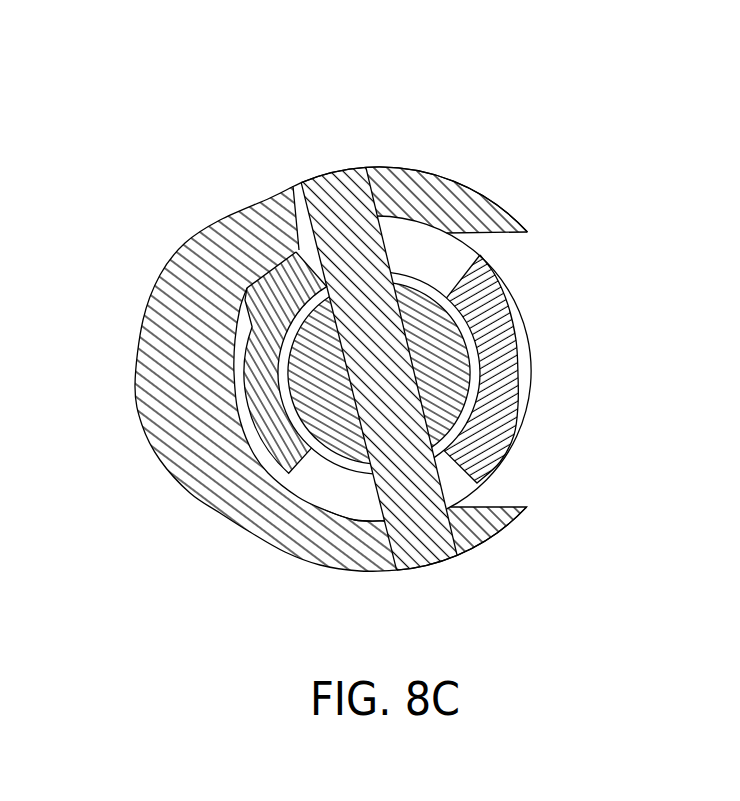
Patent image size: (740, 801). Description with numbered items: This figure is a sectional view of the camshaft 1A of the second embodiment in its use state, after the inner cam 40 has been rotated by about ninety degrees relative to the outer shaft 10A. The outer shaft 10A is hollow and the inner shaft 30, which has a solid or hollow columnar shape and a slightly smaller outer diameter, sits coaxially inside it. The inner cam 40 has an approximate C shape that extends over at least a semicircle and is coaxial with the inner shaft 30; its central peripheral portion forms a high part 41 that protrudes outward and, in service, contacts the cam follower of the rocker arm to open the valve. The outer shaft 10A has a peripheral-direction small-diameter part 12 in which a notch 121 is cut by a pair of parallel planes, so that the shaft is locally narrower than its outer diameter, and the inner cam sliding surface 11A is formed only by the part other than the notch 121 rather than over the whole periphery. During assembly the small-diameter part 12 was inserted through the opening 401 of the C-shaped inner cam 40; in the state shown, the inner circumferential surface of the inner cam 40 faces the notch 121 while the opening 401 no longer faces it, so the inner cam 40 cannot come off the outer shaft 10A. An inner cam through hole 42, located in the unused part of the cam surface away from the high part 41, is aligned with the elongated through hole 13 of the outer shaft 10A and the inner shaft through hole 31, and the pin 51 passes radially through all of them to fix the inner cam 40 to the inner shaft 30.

The camshaft 1A is at (627, 120).
The inner cam 40 is at (479, 149).
The high part 41 is at (135, 378).
The inner cam through hole 42 is at (366, 177).
The opening 401 is at (525, 232).
The inner cam sliding surface 11A is at (465, 236).
The peripheral-direction small-diameter part 12 is at (527, 402).
The notch 121 is at (234, 350).
The through hole 13 is at (293, 186).
The inner shaft 30 is at (299, 306).
The inner shaft through hole 31 is at (378, 428).
The pin 51 is at (345, 240).
The outer shaft 10A is at (333, 521).